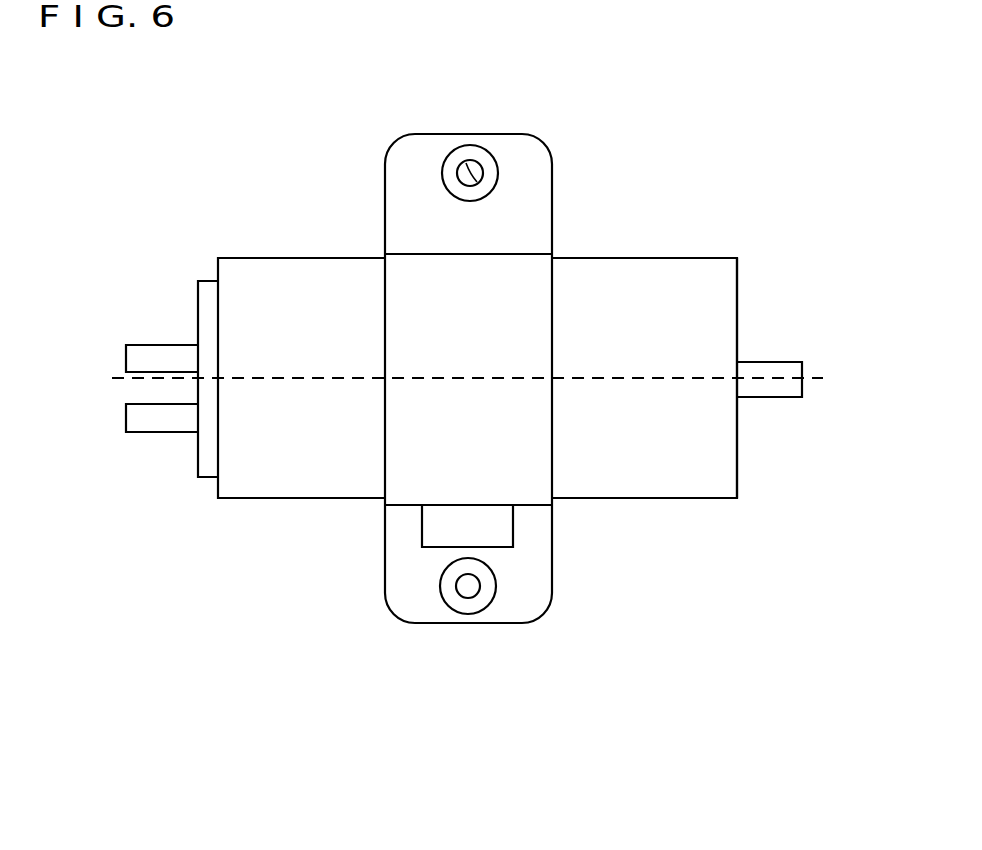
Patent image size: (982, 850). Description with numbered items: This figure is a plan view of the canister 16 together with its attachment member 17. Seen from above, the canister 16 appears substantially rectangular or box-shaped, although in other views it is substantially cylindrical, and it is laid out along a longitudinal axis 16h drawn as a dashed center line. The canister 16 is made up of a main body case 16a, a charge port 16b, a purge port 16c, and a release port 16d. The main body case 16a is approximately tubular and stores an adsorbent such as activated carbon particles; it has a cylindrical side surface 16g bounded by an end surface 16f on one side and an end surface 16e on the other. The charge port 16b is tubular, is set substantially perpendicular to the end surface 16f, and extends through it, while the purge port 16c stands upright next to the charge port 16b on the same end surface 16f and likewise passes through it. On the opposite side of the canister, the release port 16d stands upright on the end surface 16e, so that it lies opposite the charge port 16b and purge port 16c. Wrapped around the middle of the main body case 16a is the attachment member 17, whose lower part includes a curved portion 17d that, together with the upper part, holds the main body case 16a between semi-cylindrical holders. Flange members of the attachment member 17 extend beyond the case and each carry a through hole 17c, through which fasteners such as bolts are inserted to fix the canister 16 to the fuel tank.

The canister 16 is at (682, 192).
The main body case 16a is at (302, 257).
The charge port 16b is at (160, 353).
The purge port 16c is at (157, 432).
The release port 16d is at (777, 387).
The end surface 16e is at (738, 282).
The end surface 16f is at (217, 270).
The cylindrical side surface 16g is at (620, 287).
The longitudinal axis 16h is at (697, 378).
The attachment member 17 is at (527, 555).
The through hole 17c is at (480, 183).
The curved portion 17d is at (410, 447).